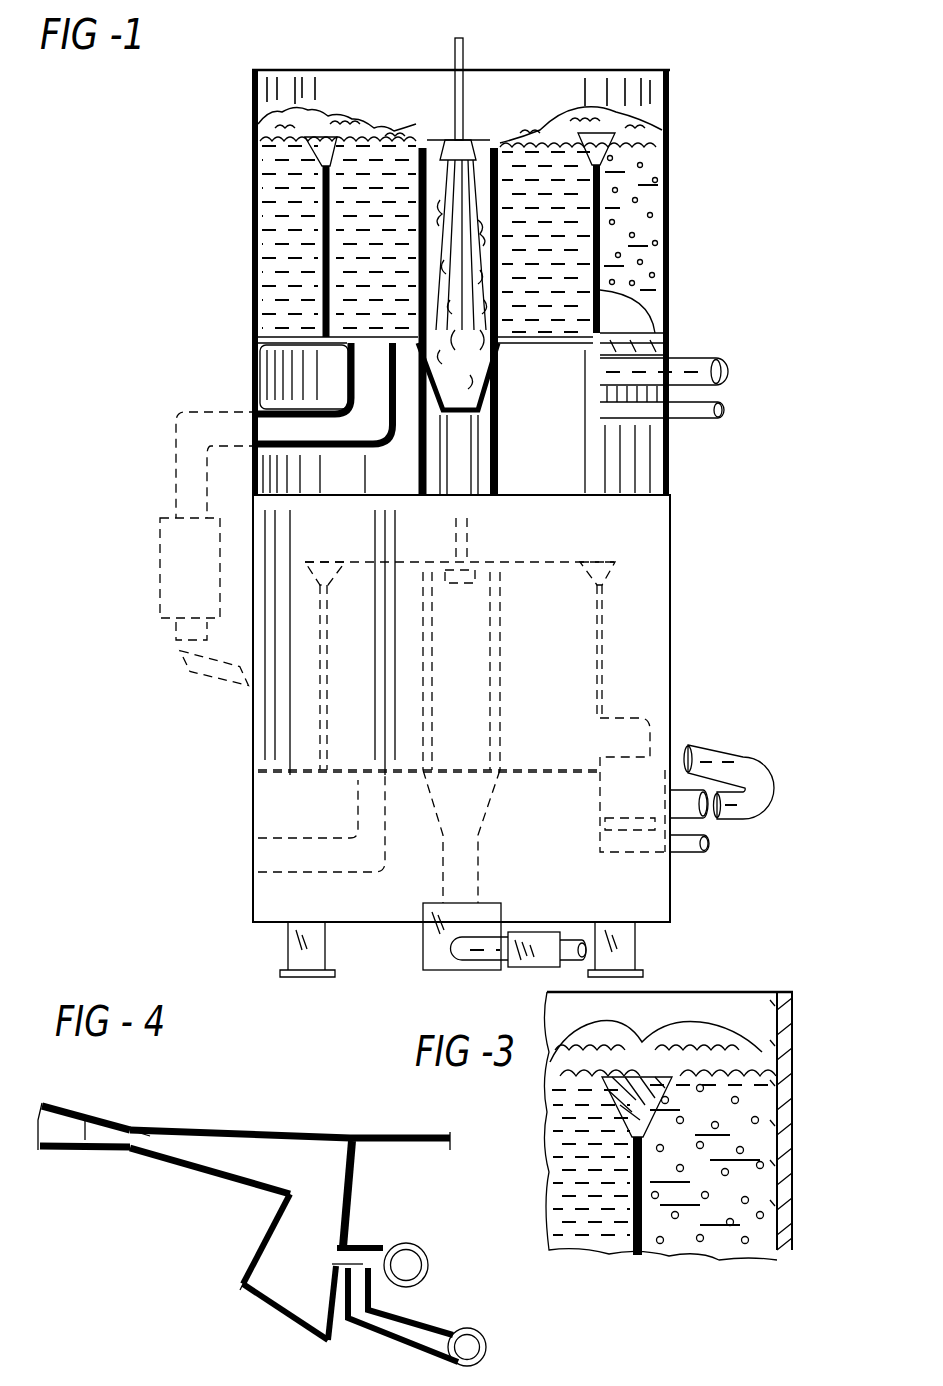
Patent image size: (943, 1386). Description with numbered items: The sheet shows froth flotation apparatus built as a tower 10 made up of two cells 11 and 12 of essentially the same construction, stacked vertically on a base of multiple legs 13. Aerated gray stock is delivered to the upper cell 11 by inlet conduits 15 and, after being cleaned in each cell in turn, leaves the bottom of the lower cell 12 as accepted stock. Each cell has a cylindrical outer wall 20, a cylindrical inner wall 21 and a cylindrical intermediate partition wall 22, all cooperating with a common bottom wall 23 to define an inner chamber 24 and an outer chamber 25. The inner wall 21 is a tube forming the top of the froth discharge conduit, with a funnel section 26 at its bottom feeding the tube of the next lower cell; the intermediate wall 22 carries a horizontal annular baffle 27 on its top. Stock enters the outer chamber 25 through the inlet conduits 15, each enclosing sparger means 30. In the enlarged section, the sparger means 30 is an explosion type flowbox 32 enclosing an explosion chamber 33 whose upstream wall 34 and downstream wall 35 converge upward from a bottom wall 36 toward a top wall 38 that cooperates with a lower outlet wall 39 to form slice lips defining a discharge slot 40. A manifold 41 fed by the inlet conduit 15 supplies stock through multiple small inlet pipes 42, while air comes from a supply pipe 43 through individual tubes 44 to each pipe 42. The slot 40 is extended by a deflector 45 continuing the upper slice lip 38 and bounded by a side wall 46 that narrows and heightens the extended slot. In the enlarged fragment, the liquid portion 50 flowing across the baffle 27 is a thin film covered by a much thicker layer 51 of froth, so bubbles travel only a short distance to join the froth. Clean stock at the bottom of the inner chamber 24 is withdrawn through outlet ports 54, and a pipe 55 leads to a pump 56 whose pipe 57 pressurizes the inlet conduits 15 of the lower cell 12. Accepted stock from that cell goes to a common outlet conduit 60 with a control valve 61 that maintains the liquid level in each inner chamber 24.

In FIG. 1, the tower 10 is at (245, 268).
In FIG. 1, the cell 11 is at (625, 60).
In FIG. 1, the cell 12 is at (675, 526).
In FIG. 1, the legs 13 is at (293, 949).
In FIG. 1, the inlet conduits 15 is at (722, 360).
In FIG. 1, the outer wall 20 is at (668, 190).
In FIG. 3, the outer wall 20 is at (794, 1134).
In FIG. 1, the inner wall 21 is at (500, 150).
In FIG. 1, the intermediate partition wall 22 is at (632, 234).
In FIG. 3, the intermediate partition wall 22 is at (642, 1258).
In FIG. 1, the bottom wall 23 is at (535, 345).
In FIG. 4, the bottom wall 23 is at (45, 1152).
In FIG. 1, the inner chamber 24 is at (587, 270).
In FIG. 3, the inner chamber 24 is at (598, 1268).
In FIG. 1, the outer chamber 25 is at (668, 150).
In FIG. 3, the outer chamber 25 is at (756, 1263).
In FIG. 1, the funnel section 26 is at (490, 405).
In FIG. 1, the annular baffle 27 is at (448, 146).
In FIG. 3, the annular baffle 27 is at (602, 1112).
In FIG. 1, the sparger means 30 is at (670, 323).
In FIG. 4, the sparger means 30 is at (368, 1227).
In FIG. 4, the flowbox 32 is at (232, 1207).
In FIG. 4, the explosion chamber 33 is at (275, 1267).
In FIG. 4, the upstream wall 34 is at (358, 1190).
In FIG. 4, the downstream wall 35 is at (255, 1241).
In FIG. 4, the bottom wall 36 is at (280, 1308).
In FIG. 4, the top wall 38 is at (290, 1135).
In FIG. 4, the lower outlet wall 39 is at (185, 1168).
In FIG. 4, the discharge slot 40 is at (150, 1136).
In FIG. 4, the manifold 41 is at (430, 1268).
In FIG. 4, the inlet pipes 42 is at (384, 1242).
In FIG. 1, the supply pipe 43 is at (726, 412).
In FIG. 4, the supply pipe 43 is at (495, 1352).
In FIG. 4, the tubes 44 is at (372, 1300).
In FIG. 4, the deflector 45 is at (85, 1112).
In FIG. 4, the side wall 46 is at (85, 1140).
In FIG. 3, the liquid portion 50 is at (663, 1072).
In FIG. 3, the layer of froth 51 is at (605, 1073).
In FIG. 1, the outlet ports 54 is at (377, 345).
In FIG. 1, the pipe 55 is at (327, 448).
In FIG. 1, the pump 56 is at (158, 576).
In FIG. 1, the pipe 57 is at (737, 763).
In FIG. 1, the outlet conduit 60 is at (453, 948).
In FIG. 1, the control valve 61 is at (540, 960).